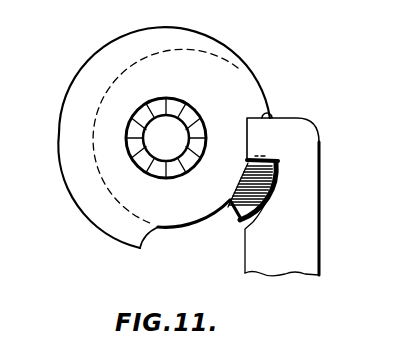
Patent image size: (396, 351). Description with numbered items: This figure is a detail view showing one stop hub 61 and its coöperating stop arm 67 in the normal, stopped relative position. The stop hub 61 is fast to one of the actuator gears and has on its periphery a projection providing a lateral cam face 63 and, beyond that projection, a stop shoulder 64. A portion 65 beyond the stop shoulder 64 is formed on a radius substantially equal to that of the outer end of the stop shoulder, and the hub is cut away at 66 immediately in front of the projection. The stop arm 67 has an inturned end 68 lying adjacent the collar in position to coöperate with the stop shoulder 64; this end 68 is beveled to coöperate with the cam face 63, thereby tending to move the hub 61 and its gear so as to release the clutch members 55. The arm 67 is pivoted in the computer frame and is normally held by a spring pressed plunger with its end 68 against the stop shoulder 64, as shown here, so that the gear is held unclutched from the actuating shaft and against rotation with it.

The clutch faces 55 is at (143, 161).
The stop hub 61 is at (254, 91).
The cam face 63 is at (234, 214).
The stop shoulder 64 is at (272, 110).
The portion beyond stop shoulder 65 is at (61, 103).
The cut away 66 is at (157, 232).
The stop arm 67 is at (307, 252).
The inturned end 68 is at (283, 138).